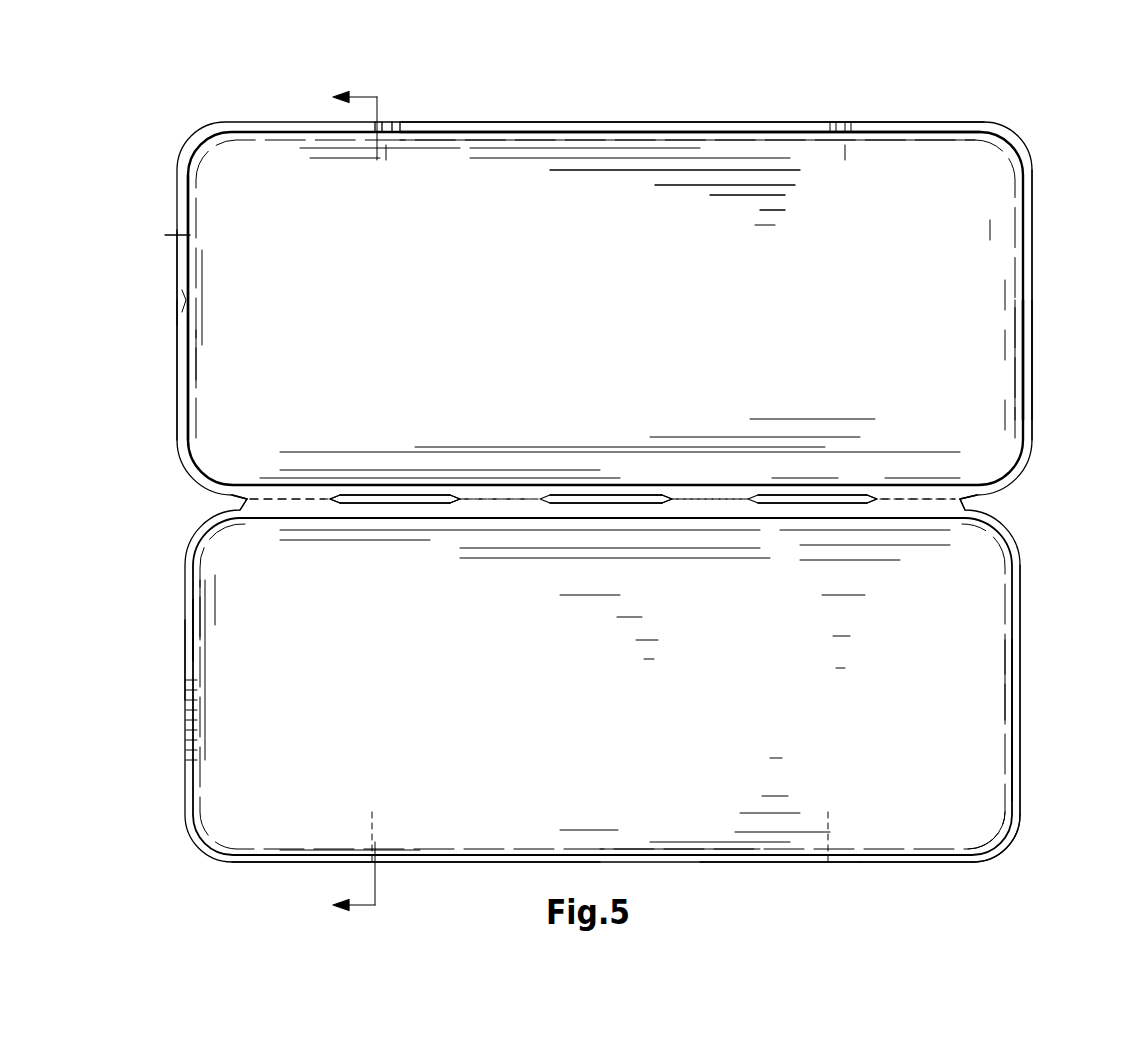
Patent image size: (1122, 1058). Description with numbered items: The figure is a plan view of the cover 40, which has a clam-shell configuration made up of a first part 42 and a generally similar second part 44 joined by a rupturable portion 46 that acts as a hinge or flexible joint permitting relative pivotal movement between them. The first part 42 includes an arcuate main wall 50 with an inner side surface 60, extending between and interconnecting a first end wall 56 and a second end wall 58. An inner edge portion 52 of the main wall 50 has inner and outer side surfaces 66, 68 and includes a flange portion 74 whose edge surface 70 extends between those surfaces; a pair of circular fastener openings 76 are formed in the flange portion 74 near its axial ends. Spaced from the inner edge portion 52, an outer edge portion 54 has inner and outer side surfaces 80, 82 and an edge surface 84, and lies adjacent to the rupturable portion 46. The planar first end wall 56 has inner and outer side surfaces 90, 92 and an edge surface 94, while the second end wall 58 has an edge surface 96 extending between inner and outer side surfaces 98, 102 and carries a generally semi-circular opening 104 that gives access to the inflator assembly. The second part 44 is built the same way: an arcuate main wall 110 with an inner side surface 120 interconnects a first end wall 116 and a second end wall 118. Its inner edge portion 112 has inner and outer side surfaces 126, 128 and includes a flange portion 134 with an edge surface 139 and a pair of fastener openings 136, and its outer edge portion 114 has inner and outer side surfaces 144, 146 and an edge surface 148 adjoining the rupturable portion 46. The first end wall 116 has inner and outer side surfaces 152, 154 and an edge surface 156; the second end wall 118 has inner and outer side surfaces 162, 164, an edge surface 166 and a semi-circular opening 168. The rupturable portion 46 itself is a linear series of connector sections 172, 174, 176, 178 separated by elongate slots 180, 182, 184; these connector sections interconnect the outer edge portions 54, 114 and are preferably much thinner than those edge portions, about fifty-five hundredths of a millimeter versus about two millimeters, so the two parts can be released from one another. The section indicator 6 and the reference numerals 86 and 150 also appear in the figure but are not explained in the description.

The section line 6- 6 is at (341, 503).
The cover 40 is at (1080, 482).
The first part 42 is at (1060, 644).
The second part 44 is at (1068, 270).
The rupturable portion 46 is at (1028, 506).
The arcuate main wall 50 is at (718, 795).
The inner edge portion 52 is at (876, 880).
The outer edge portion 54 is at (350, 532).
The first end wall 56 is at (1038, 602).
The second end wall 58 is at (220, 684).
The inner side surface 60 is at (660, 790).
The inner side surface 66 is at (928, 849).
The outer side surface 68 is at (943, 865).
The edge surface 70 is at (773, 856).
The flange portion 74 is at (455, 880).
The fastener openings 76 is at (360, 860).
The inner side surface 80 is at (808, 512).
The outer side surface 82 is at (835, 492).
The edge surface 84 is at (767, 510).
The hinge pad end 86 is at (684, 535).
The inner side surface 90 is at (1010, 705).
The outer side surface 92 is at (1020, 712).
The edge surface 94 is at (1015, 750).
The edge surface 96 is at (195, 655).
The inner side surface 98 is at (197, 635).
The outer side surface 102 is at (192, 628).
The semi-circular opening 104 is at (197, 700).
The arcuate main wall 110 is at (693, 190).
The inner edge portion 112 is at (430, 105).
The outer edge portion 114 is at (354, 462).
The first end wall 116 is at (1052, 228).
The second end wall 118 is at (210, 365).
The inner side surface 120 is at (748, 223).
The inner side surface 126 is at (500, 140).
The outer side surface 128 is at (500, 122).
The flange portion 134 is at (408, 105).
The fastener openings 136 is at (385, 133).
The edge surface 139 is at (575, 123).
The inner side surface 144 is at (422, 482).
The outer side surface 146 is at (395, 495).
The edge surface 148 is at (572, 495).
The hinge pad 150 is at (645, 462).
The inner side surface 152 is at (1023, 355).
The outer side surface 154 is at (1028, 358).
The edge surface 156 is at (1030, 390).
The inner side surface 162 is at (190, 312).
The outer side surface 164 is at (175, 332).
The edge surface 166 is at (186, 362).
The semi-circular opening 168 is at (187, 268).
The connector section 172 is at (287, 498).
The connector section 174 is at (493, 498).
The connector section 176 is at (705, 497).
The connector section 178 is at (916, 492).
The elongate slot 180 is at (360, 503).
The elongate slot 182 is at (570, 508).
The elongate slot 184 is at (797, 482).